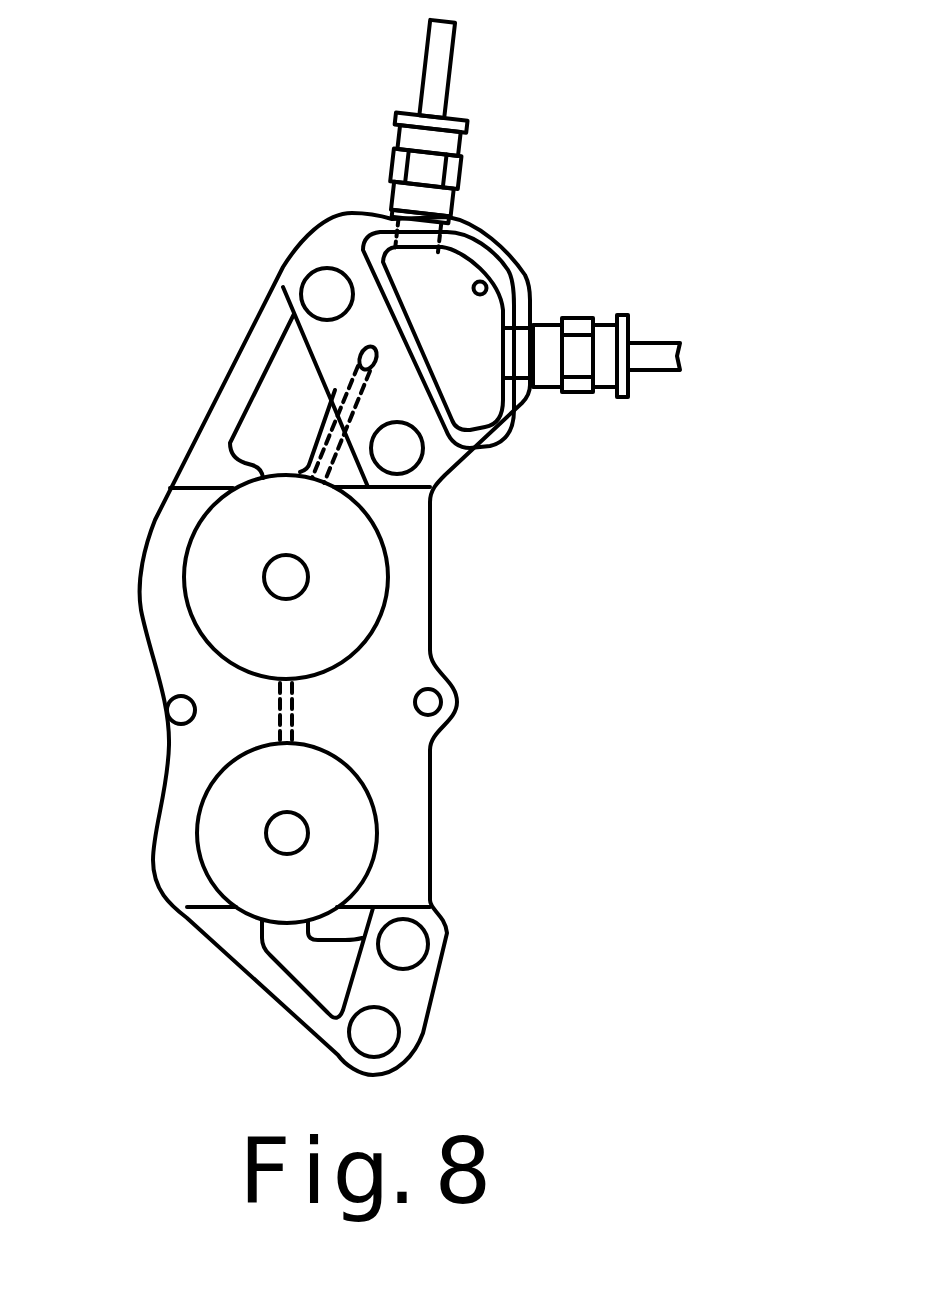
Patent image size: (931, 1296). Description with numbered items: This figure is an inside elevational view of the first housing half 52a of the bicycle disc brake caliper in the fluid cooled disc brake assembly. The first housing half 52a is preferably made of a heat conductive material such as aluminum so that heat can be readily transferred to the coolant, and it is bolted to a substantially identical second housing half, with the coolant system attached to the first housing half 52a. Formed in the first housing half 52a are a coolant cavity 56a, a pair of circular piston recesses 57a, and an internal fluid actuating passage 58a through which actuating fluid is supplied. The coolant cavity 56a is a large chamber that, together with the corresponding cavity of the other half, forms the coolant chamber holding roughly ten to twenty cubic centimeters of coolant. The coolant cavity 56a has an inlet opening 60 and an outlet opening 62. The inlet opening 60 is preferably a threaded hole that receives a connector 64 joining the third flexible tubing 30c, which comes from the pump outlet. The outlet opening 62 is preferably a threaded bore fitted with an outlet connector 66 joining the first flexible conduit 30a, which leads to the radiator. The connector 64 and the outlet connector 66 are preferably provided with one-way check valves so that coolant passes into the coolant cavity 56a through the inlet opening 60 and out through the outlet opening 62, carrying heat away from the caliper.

The first flexible conduit 30a is at (452, 58).
The outlet connector 66 is at (392, 198).
The outlet opening 62 is at (467, 220).
The coolant cavity 56a is at (490, 282).
The third flexible tubing 30c is at (650, 345).
The connector 64 is at (580, 392).
The inlet opening 60 is at (518, 386).
The first housing half 52a is at (223, 384).
The internal fluid actuating passage 58a is at (313, 437).
The circular piston recesses 57a is at (337, 780).